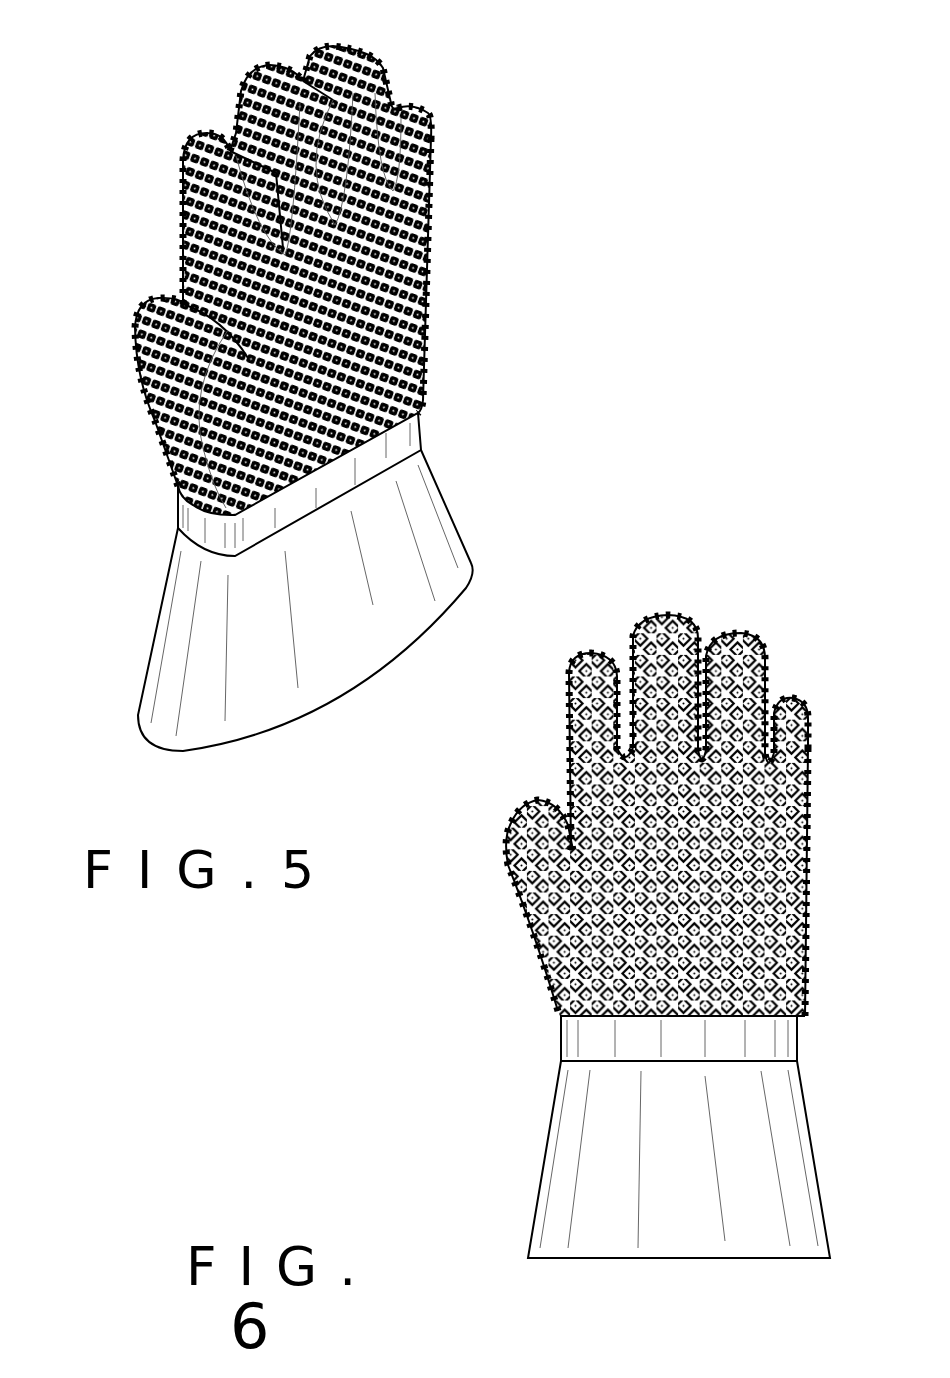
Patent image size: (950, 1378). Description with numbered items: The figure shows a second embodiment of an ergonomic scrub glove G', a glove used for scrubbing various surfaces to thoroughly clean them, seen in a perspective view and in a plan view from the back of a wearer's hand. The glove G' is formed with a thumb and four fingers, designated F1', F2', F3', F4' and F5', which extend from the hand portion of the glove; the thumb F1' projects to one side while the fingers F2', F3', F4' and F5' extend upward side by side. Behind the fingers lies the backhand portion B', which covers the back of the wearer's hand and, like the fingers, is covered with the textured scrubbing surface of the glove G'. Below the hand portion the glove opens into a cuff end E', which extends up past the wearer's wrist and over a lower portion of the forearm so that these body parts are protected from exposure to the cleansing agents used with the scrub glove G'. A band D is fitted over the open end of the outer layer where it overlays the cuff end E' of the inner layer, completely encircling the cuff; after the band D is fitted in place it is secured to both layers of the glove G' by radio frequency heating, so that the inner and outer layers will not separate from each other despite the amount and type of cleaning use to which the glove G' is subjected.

In FIG. 5, the thumb F1' is at (150, 379).
In FIG. 6, the thumb F1' is at (497, 891).
In FIG. 5, the finger F2' is at (204, 203).
In FIG. 6, the finger F2' is at (578, 727).
In FIG. 5, the finger F3' is at (273, 119).
In FIG. 6, the finger F3' is at (659, 643).
In FIG. 5, the finger F4' is at (395, 108).
In FIG. 6, the finger F4' is at (750, 651).
In FIG. 5, the finger F5' is at (473, 105).
In FIG. 6, the finger F5' is at (832, 689).
In FIG. 5, the scrub glove G' is at (379, 280).
In FIG. 6, the scrub glove G' is at (697, 761).
In FIG. 5, the backhand portion B' is at (437, 275).
In FIG. 6, the backhand portion B' is at (720, 882).
In FIG. 5, the band D is at (350, 457).
In FIG. 6, the band D is at (720, 1030).
In FIG. 5, the cuff end E' is at (305, 600).
In FIG. 6, the cuff end E' is at (679, 1159).